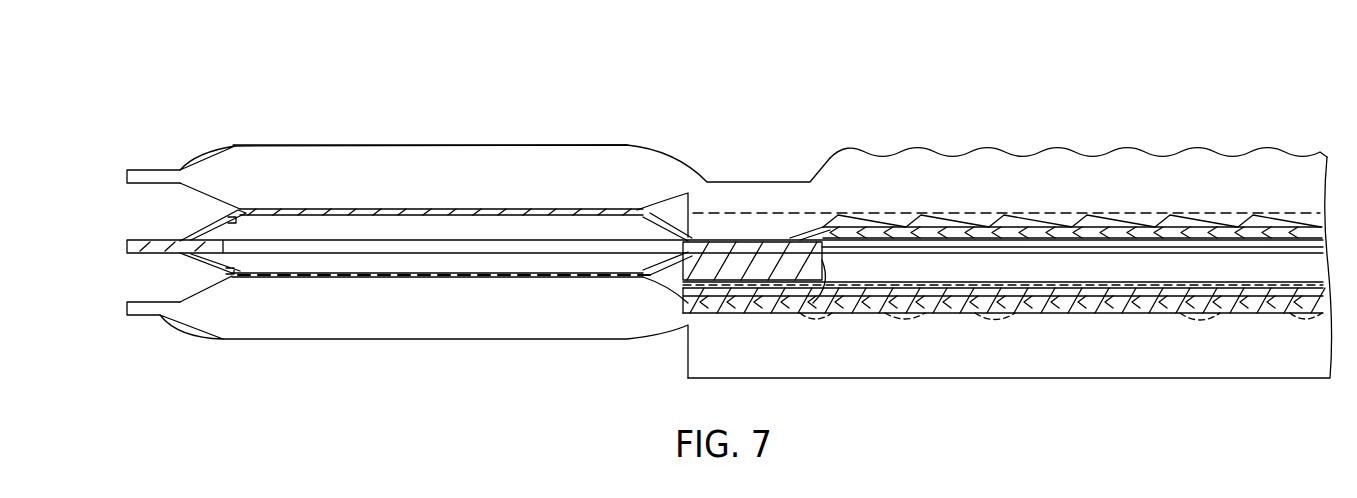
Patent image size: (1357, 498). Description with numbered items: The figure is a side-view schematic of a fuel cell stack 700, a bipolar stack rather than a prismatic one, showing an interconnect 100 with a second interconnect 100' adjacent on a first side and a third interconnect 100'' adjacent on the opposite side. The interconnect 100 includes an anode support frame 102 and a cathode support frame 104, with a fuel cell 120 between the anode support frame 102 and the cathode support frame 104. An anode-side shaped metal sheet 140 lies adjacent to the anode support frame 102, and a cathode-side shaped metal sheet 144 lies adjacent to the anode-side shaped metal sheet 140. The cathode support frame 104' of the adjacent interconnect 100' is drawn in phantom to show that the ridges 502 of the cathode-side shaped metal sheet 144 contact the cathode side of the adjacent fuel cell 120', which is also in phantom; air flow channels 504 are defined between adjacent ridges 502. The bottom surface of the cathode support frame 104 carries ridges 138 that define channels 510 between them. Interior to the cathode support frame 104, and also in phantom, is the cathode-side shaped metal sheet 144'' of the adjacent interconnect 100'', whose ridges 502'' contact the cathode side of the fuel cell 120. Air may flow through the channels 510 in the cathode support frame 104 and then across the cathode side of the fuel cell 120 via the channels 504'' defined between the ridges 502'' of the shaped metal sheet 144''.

The fuel cell stack 700 is at (163, 78).
The second interconnect 100' is at (448, 191).
The interconnect 100 is at (697, 237).
The third interconnect 100'' is at (374, 325).
The cathode-side shaped metal sheet 144 is at (497, 211).
The anode-side shaped metal sheet 140 is at (200, 262).
The cathode support frame 104 is at (1003, 321).
The fuel cell 120 is at (1003, 318).
The anode support frame 102 is at (766, 268).
The cathode-side shaped metal sheet of adjacent interconnect 144'' is at (841, 302).
The channels 510 is at (903, 313).
The ridges 138 is at (921, 313).
The ridges 502'' is at (1001, 327).
The channels 504'' is at (1007, 315).
The adjacent fuel cell 120' is at (1006, 165).
The ridges 502 is at (1072, 175).
The air flow channels 504 is at (1072, 175).
The cathode support frame of adjacent interconnect 104' is at (1010, 243).